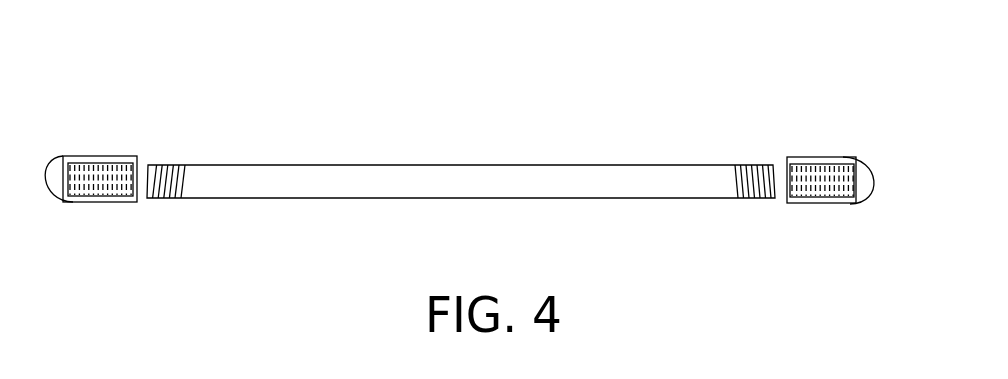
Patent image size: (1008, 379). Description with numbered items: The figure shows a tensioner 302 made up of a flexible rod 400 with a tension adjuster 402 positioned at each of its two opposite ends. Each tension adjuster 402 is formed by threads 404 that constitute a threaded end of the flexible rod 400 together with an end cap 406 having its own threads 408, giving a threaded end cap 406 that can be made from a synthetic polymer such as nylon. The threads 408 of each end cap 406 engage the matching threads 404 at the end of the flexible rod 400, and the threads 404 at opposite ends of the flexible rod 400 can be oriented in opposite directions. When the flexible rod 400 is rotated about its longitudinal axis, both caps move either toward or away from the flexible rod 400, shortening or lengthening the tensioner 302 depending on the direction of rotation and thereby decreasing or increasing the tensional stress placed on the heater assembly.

The tensioner 302 is at (220, 72).
The flexible rod 400 is at (423, 190).
The tension adjuster 402 is at (461, 176).
The threads 404 is at (165, 158).
The end cap 406 is at (85, 192).
The threads 408 is at (110, 216).